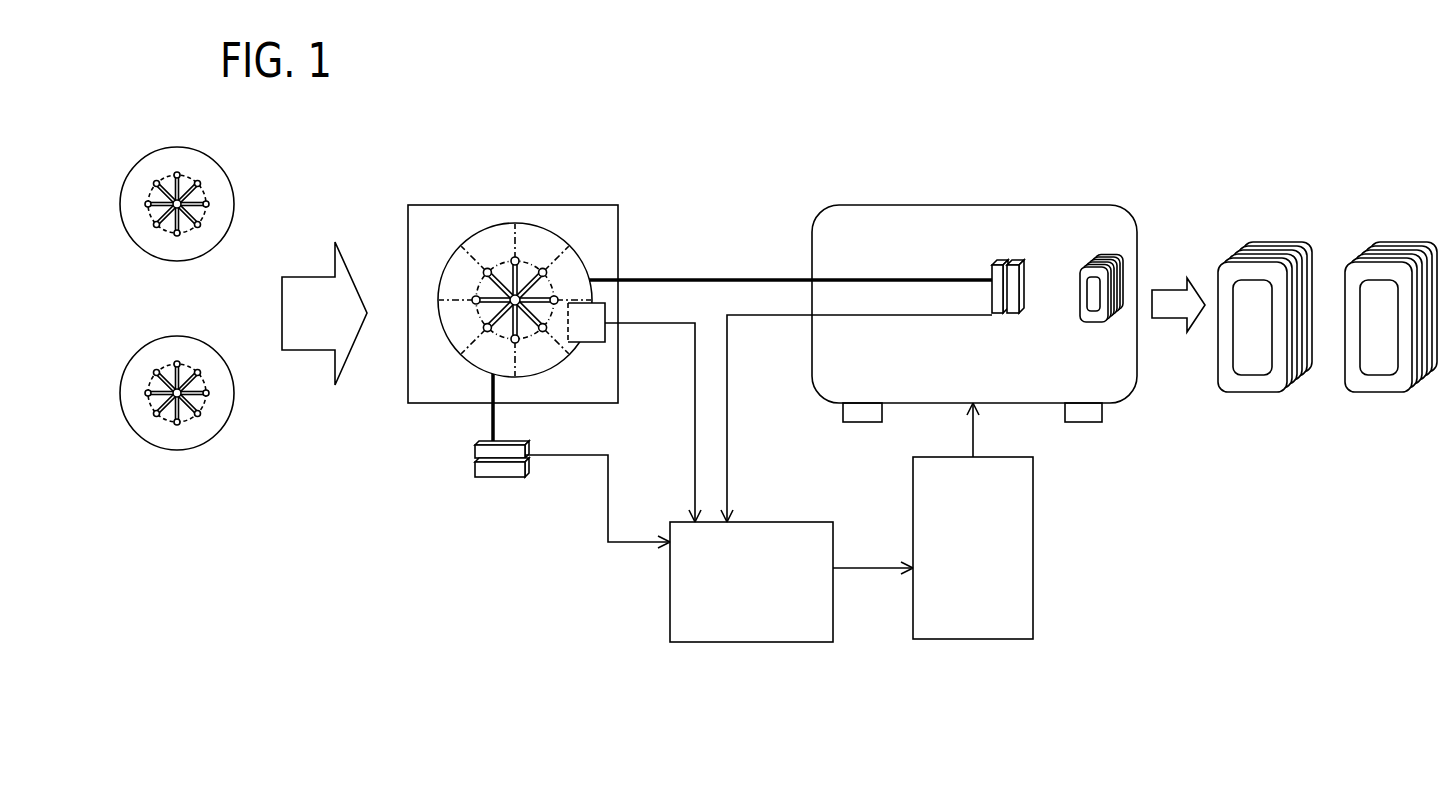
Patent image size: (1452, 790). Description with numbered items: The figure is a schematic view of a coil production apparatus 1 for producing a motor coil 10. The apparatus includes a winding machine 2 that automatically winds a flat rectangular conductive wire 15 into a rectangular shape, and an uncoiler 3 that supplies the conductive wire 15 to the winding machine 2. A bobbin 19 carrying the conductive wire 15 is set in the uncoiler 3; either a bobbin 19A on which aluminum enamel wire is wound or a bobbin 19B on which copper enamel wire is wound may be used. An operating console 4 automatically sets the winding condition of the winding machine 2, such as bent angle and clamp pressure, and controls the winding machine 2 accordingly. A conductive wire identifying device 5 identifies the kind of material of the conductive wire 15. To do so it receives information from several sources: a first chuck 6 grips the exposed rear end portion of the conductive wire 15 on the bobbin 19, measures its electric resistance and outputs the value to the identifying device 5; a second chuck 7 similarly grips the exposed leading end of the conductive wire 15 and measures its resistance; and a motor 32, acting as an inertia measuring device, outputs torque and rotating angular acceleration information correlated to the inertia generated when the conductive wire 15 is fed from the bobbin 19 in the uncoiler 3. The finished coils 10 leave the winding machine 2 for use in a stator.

The coil production apparatus 1 is at (922, 135).
The winding machine 2 is at (982, 205).
The uncoiler 3 is at (451, 205).
The operating console 4 is at (1033, 609).
The conductive wire identifying device 5 is at (833, 621).
The first chuck 6 is at (494, 478).
The second chuck 7 is at (1027, 272).
The coil 10 is at (1100, 258).
The conductive wire 15 is at (673, 278).
The bobbin 19 is at (551, 230).
The bobbin 19A is at (211, 156).
The bobbin 19B is at (233, 394).
The motor 32 is at (593, 342).